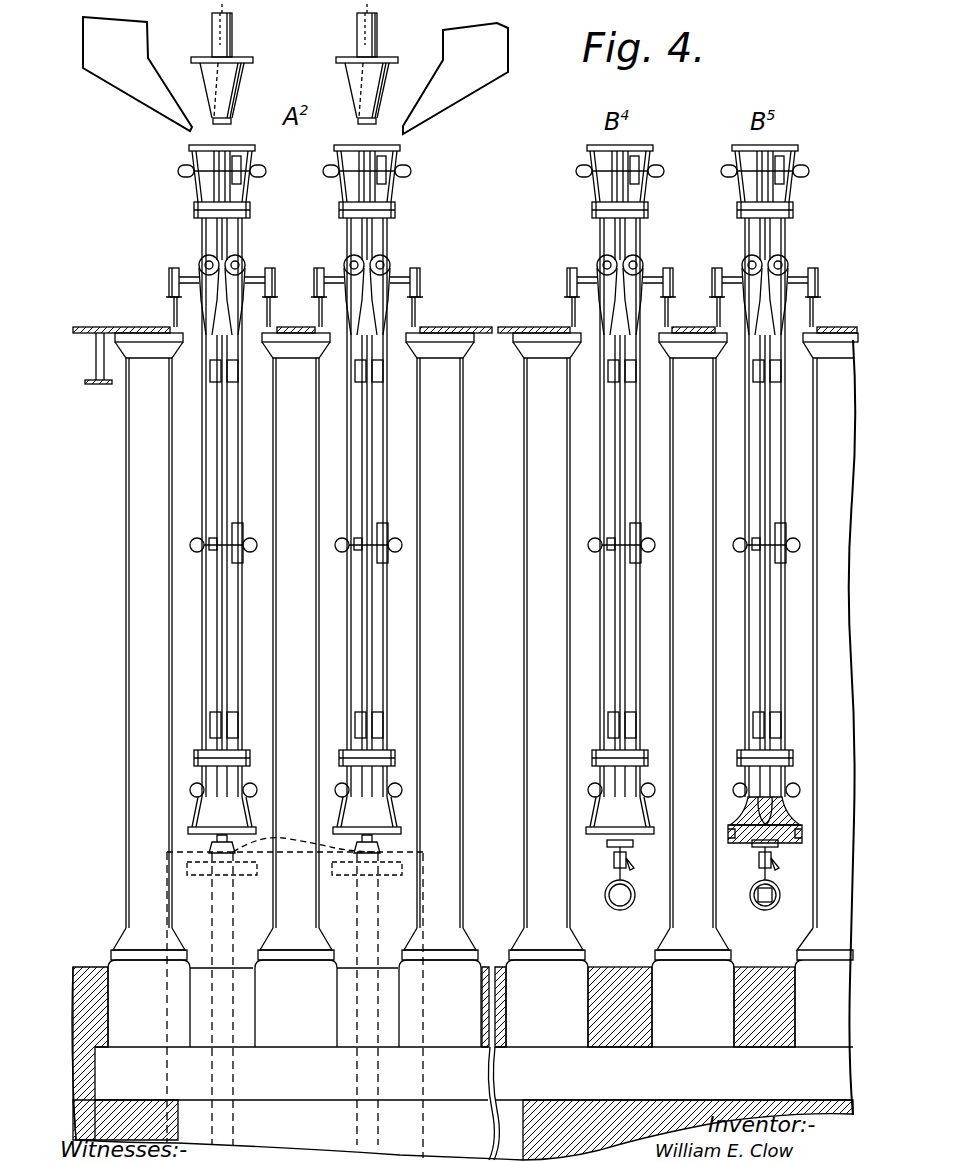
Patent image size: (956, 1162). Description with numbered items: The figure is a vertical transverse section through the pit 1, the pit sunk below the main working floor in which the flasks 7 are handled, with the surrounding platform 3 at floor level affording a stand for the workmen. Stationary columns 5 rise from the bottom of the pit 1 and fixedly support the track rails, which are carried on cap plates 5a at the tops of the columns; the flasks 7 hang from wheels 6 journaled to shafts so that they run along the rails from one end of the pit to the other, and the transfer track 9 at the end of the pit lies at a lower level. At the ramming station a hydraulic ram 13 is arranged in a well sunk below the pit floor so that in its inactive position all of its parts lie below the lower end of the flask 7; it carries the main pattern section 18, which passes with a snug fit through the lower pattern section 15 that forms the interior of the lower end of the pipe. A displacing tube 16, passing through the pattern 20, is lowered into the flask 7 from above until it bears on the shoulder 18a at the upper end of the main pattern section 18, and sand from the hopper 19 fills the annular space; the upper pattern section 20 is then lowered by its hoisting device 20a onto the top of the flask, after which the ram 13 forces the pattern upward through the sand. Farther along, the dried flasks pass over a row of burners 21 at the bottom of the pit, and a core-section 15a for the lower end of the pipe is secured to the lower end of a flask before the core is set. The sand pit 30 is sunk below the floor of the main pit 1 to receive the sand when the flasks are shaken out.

The pit 1 is at (462, 890).
The platform 3 is at (100, 326).
The stationary columns 5 is at (160, 540).
The cap beam plate 5a is at (497, 326).
The wheels 6 is at (170, 280).
The flasks 7 is at (203, 468).
The transfer track 9 is at (173, 308).
The hydraulic ram 13 is at (187, 897).
The pattern section 15 is at (295, 840).
The core-section 15a is at (785, 821).
The displacing tube 16 is at (234, 42).
The main pattern section 18 is at (226, 928).
The shoulder 18a is at (215, 840).
The hopper 19 is at (103, 82).
The pattern section 20 is at (232, 90).
The hoisting device 20a is at (228, 34).
The burners 21 is at (692, 875).
The sand pit 30 is at (463, 1130).